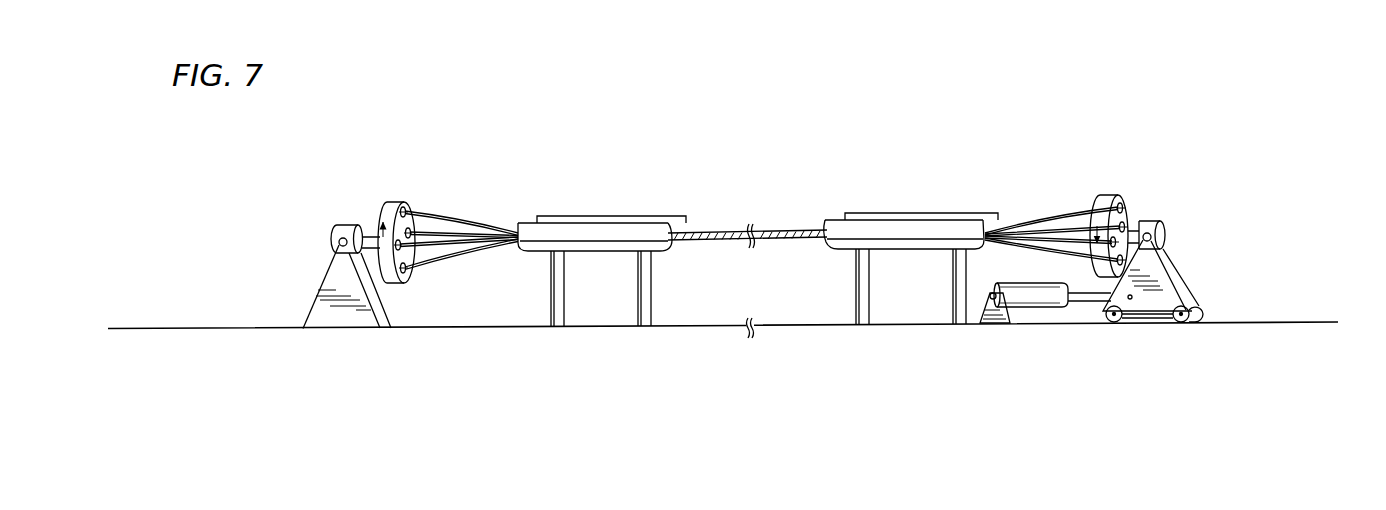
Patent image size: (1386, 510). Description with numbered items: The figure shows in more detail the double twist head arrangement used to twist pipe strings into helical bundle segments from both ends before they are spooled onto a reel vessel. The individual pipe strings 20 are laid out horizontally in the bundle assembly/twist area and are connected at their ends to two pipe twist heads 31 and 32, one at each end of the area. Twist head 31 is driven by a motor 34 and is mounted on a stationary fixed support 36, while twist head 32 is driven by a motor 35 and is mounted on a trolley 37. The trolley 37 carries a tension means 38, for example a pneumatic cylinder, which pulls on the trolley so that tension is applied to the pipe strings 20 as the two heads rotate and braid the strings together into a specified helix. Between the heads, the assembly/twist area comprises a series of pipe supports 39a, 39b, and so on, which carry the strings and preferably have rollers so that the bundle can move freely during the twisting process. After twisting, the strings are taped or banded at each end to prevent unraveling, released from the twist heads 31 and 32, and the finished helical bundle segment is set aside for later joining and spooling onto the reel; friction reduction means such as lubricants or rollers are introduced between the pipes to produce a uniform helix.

The pipe strings 20 is at (430, 232).
The pipe twist head 31 is at (397, 196).
The pipe twist head 32 is at (1108, 190).
The motor 34 is at (339, 222).
The motor 35 is at (1160, 219).
The stationary fixed support 36 is at (346, 318).
The trolley 37 is at (1186, 284).
The tension means 38 is at (1048, 309).
The pipe support 39a is at (628, 211).
The pipe support 39b is at (907, 209).